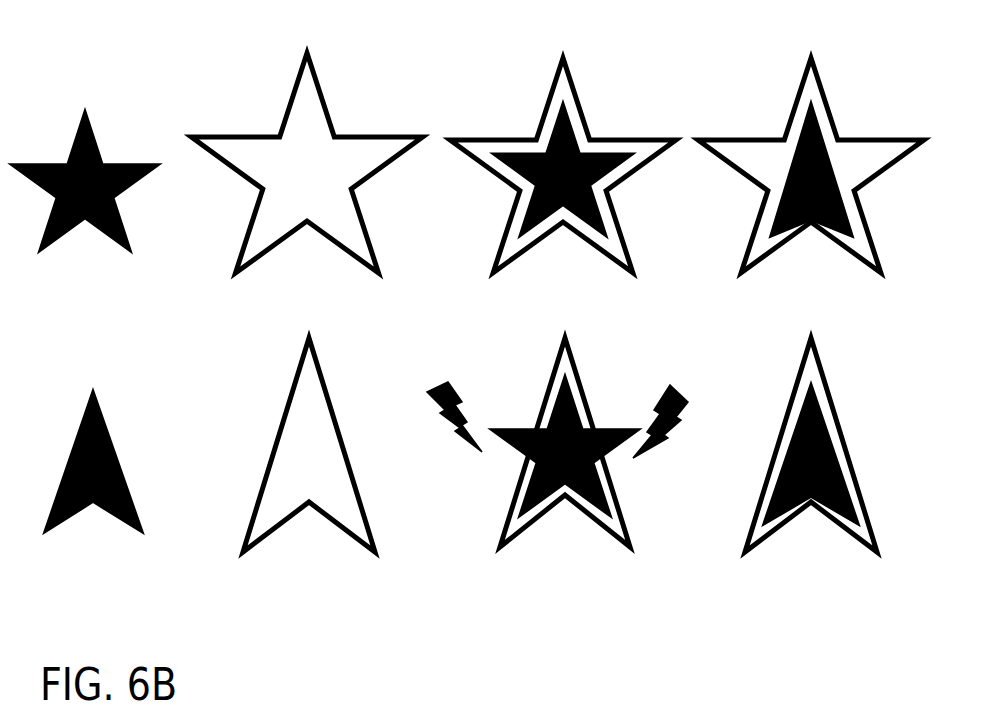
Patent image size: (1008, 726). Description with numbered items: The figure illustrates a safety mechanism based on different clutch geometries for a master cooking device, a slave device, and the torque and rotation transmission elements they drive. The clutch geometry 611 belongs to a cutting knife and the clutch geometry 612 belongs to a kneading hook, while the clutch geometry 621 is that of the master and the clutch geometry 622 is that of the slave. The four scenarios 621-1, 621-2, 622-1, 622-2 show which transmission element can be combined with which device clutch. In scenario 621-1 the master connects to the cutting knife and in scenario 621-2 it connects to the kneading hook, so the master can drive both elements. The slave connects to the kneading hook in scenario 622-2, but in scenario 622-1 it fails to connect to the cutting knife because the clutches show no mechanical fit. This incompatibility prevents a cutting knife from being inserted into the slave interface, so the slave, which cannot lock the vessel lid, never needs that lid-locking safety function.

The clutch geometry for a cutting knife 611 is at (96, 126).
The clutch geometry for a kneading hook 612 is at (113, 432).
The clutch geometry of the master 621 is at (323, 88).
The scenario of master connecting to cutting knife 621-1 is at (576, 88).
The scenario of master connecting to kneading hook 621-2 is at (819, 80).
The clutch geometry of the slave 622 is at (324, 369).
The scenario of slave failing to connect to cutting knife 622-1 is at (579, 366).
The scenario of slave connecting to kneading hook 622-2 is at (826, 360).